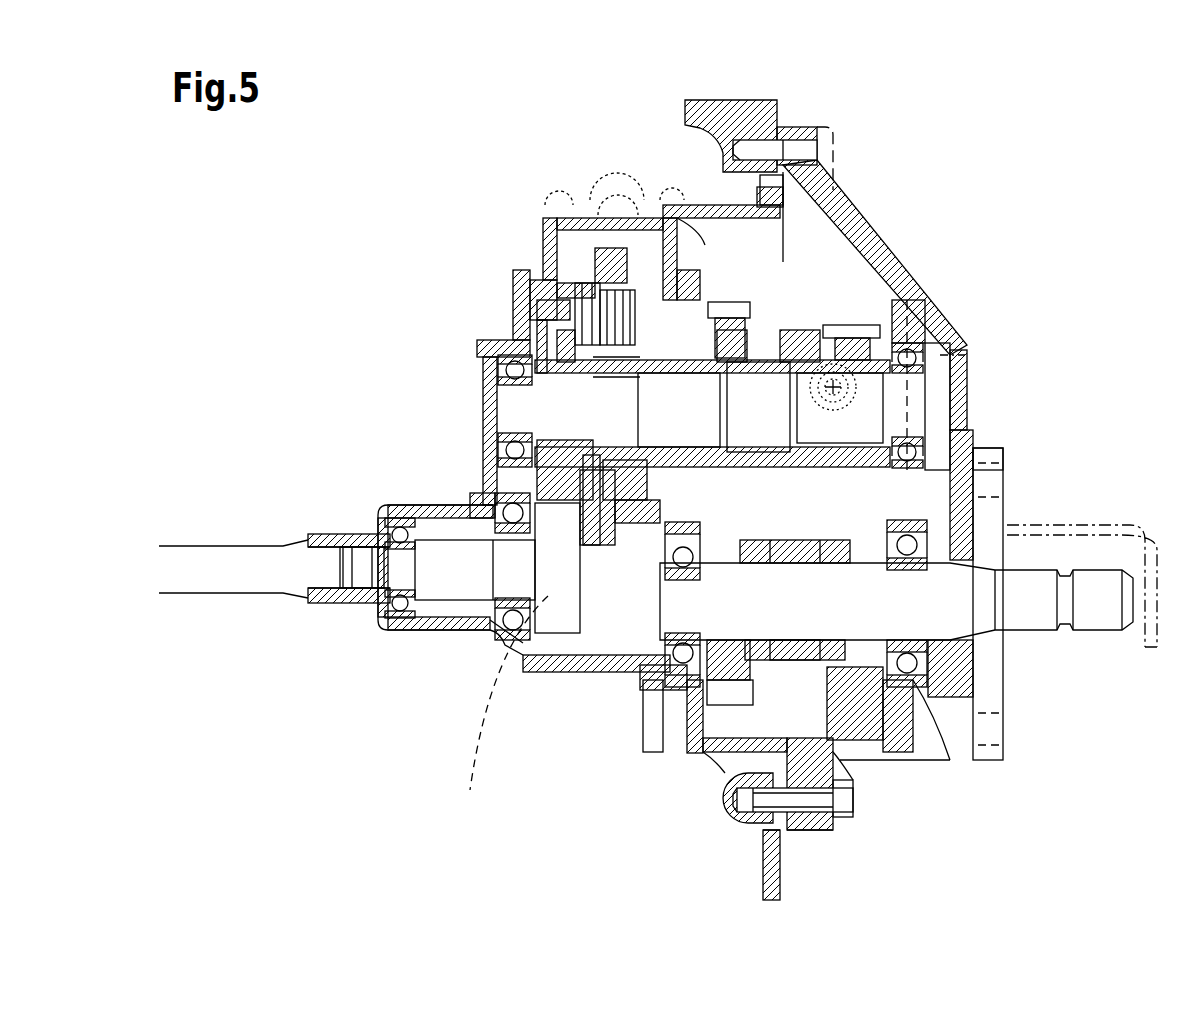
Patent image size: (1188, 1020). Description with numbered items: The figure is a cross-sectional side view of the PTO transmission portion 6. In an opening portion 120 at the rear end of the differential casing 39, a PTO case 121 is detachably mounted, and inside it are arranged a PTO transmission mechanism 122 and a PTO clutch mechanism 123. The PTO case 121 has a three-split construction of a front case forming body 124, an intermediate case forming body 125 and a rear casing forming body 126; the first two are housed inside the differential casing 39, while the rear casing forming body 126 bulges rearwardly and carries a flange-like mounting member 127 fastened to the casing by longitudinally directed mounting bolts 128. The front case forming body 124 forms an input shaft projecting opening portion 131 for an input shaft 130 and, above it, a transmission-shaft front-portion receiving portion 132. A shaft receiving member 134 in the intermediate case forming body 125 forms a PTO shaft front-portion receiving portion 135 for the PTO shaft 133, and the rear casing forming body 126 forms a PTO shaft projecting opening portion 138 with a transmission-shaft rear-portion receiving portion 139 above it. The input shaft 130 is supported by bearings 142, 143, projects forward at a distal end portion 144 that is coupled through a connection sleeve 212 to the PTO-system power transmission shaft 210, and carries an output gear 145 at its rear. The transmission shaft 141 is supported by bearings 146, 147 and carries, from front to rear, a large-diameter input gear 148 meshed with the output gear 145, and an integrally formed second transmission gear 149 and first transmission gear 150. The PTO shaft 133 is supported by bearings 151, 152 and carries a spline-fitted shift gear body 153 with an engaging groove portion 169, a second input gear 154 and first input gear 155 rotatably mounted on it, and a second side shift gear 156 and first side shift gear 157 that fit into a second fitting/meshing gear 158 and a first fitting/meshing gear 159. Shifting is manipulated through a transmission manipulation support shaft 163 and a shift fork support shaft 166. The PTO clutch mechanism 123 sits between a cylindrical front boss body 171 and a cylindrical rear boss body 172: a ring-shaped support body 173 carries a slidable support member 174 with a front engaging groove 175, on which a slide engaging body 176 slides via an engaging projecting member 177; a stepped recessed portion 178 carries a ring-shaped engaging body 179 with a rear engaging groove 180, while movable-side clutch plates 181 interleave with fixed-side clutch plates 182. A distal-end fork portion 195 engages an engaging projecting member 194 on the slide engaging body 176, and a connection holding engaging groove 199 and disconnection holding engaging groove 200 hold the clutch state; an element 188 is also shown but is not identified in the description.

The PTO transmission portion 6 is at (962, 120).
The differential casing 39 is at (738, 112).
The opening portion 120 is at (752, 185).
The PTO case 121 is at (870, 230).
The PTO transmission mechanism 122 is at (870, 430).
The PTO clutch mechanism 123 is at (552, 225).
The front case forming body 124 is at (500, 332).
The intermediate case forming body 125 is at (690, 752).
The rear casing forming body 126 is at (895, 305).
The mounting member 127 is at (800, 128).
The mounting bolts 128 is at (805, 150).
The input shaft 130 is at (445, 575).
The input shaft projecting opening portion 131 is at (440, 510).
The transmission-shaft front-portion receiving portion 132 is at (505, 500).
The PTO shaft 133 is at (1035, 585).
The shaft receiving member 134 is at (677, 240).
The PTO shaft front-portion receiving portion 135 is at (692, 725).
The PTO shaft projecting opening portion 138 is at (960, 655).
The transmission-shaft rear-portion receiving portion 139 is at (812, 518).
The transmission shaft 141 is at (815, 375).
The bearing 142 is at (400, 618).
The bearing 143 is at (525, 660).
The distal end portion 144 is at (362, 560).
The output gear 145 is at (562, 612).
The bearing 146 is at (515, 400).
The bearing 147 is at (910, 345).
The large-diameter input gear 148 is at (540, 310).
The second transmission gear 149 is at (722, 302).
The first transmission gear 150 is at (845, 325).
The bearing 151 is at (683, 690).
The bearing 152 is at (905, 680).
The shift gear body 153 is at (793, 668).
The second input gear 154 is at (702, 740).
The first input gear 155 is at (858, 718).
The second side shift gear 156 is at (768, 817).
The first side shift gear 157 is at (835, 712).
The second fitting/meshing gear 158 is at (765, 690).
The first fitting/meshing gear 159 is at (898, 712).
The transmission manipulation support shaft 163 is at (930, 400).
The shift fork support shaft 166 is at (985, 480).
The engaging groove portion 169 is at (960, 358).
The cylindrical front boss body 171 is at (628, 440).
The cylindrical rear boss body 172 is at (660, 358).
The ring-shaped support body 173 is at (560, 455).
The slidable support member 174 is at (610, 525).
The front engaging groove 175 is at (485, 500).
The slide engaging body 176 is at (590, 550).
The engaging projecting member 177 is at (505, 696).
The stepped recessed portion 178 is at (805, 560).
The ring-shaped engaging body 179 is at (642, 250).
The rear engaging groove 180 is at (600, 280).
The movable-side clutch plates 181 is at (600, 300).
The fixed-side clutch plates 182 is at (615, 472).
The gear 188 is at (616, 190).
The engaging projecting member 194 is at (560, 335).
The distal-end fork portion 195 is at (590, 258).
The connection holding engaging groove 199 is at (490, 338).
The disconnection holding engaging groove 200 is at (560, 290).
The PTO-system power transmission shaft 210 is at (208, 545).
The connection sleeve 212 is at (322, 602).